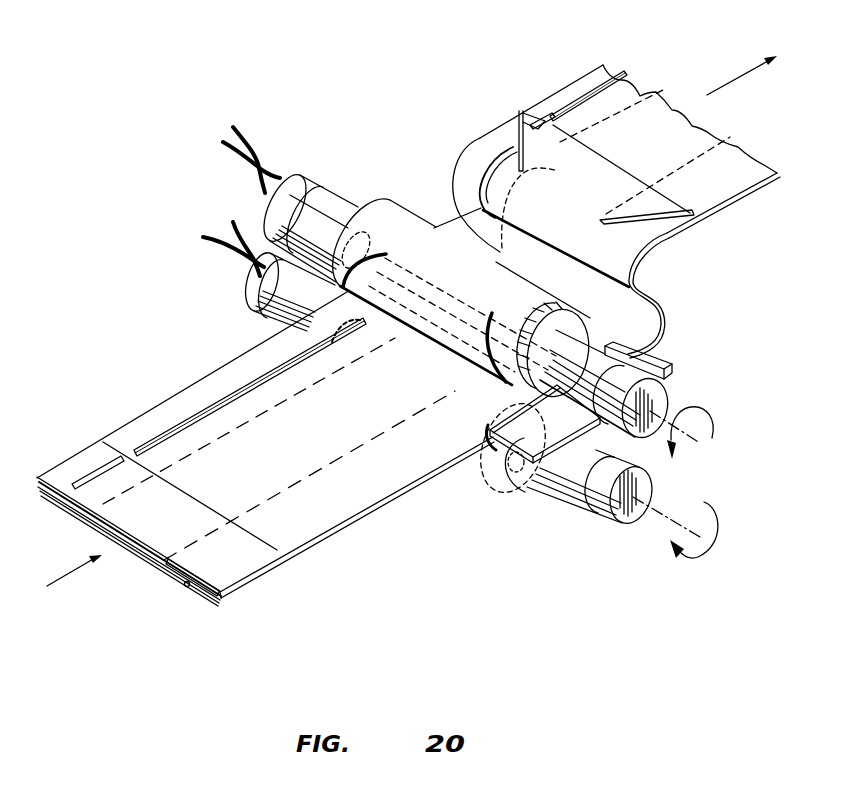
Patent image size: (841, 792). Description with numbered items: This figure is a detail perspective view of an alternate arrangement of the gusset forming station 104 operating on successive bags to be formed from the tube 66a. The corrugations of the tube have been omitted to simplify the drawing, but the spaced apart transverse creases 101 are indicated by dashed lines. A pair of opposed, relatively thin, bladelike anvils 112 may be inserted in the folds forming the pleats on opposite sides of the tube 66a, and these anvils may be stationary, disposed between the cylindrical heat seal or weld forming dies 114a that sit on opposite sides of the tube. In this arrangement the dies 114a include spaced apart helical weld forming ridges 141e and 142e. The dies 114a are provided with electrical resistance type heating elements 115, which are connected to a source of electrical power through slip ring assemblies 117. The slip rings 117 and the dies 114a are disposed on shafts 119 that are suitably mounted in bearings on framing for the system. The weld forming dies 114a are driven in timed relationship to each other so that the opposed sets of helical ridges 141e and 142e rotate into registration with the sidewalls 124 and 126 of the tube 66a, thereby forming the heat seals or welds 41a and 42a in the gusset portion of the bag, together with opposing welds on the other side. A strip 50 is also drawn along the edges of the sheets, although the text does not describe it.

The strip 50 is at (80, 478).
The transverse creases 101 is at (140, 458).
The heat seal or weld 41a is at (507, 136).
The heat seal or weld 42a is at (668, 235).
The gusset forming station 104 is at (403, 186).
The weld forming dies 114a is at (368, 200).
The slip ring assemblies 117 is at (266, 210).
The bladelike anvils 112 is at (276, 318).
The helical weld forming ridge 141e is at (344, 270).
The helical weld forming ridge 142e is at (500, 292).
The heating elements 115 is at (544, 318).
The shafts 119 is at (660, 346).
The sidewall 124 is at (139, 516).
The sidewall 126 is at (150, 561).
The tube 66a is at (188, 587).